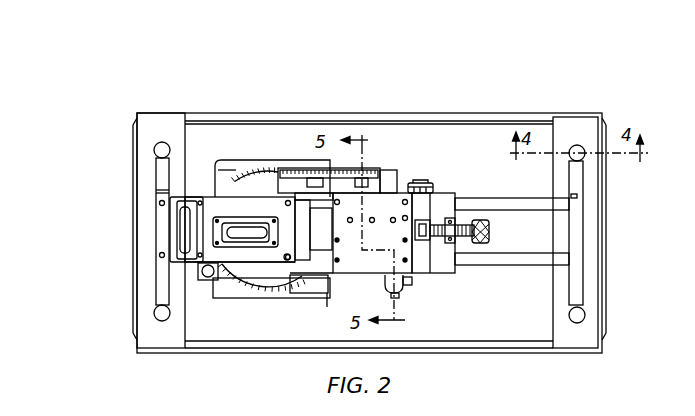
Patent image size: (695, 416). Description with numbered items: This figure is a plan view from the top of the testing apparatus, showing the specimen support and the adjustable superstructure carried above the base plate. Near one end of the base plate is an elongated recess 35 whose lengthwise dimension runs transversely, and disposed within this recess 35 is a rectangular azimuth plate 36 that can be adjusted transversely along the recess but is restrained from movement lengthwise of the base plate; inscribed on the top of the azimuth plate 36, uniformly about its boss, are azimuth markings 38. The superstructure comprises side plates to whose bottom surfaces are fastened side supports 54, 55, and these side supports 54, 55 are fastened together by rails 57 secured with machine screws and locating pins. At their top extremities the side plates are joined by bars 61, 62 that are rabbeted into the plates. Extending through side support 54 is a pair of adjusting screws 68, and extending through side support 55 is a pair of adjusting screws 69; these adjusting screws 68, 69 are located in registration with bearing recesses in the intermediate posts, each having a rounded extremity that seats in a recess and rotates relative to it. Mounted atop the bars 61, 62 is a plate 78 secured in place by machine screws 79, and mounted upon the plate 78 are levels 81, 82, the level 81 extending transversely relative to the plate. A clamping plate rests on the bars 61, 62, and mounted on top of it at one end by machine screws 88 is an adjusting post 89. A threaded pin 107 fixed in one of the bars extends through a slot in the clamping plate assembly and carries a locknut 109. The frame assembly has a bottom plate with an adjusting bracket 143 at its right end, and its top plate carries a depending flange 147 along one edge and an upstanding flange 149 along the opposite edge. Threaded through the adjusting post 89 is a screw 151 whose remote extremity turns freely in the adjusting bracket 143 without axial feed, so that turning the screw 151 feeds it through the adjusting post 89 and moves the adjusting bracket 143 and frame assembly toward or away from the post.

The elongated recess 35 is at (258, 298).
The azimuth plate 36 is at (236, 172).
The azimuth markings 38 is at (235, 276).
The side support 54 is at (582, 352).
The side support 55 is at (163, 115).
The rails 57 is at (208, 195).
The bar 61 is at (534, 262).
The bar 62 is at (507, 208).
The adjusting screws 68 is at (581, 147).
The adjusting screws 69 is at (158, 146).
The plate 78 is at (216, 162).
The machine screws 79 is at (286, 260).
The level 81 is at (176, 232).
The level 82 is at (240, 218).
The machine screws 88 is at (455, 222).
The adjusting post 89 is at (483, 220).
The threaded pin 107 is at (412, 182).
The locknut 109 is at (420, 182).
The adjusting bracket 143 is at (449, 217).
The depending flange 147 is at (360, 279).
The upstanding flange 149 is at (347, 188).
The screw 151 is at (468, 225).